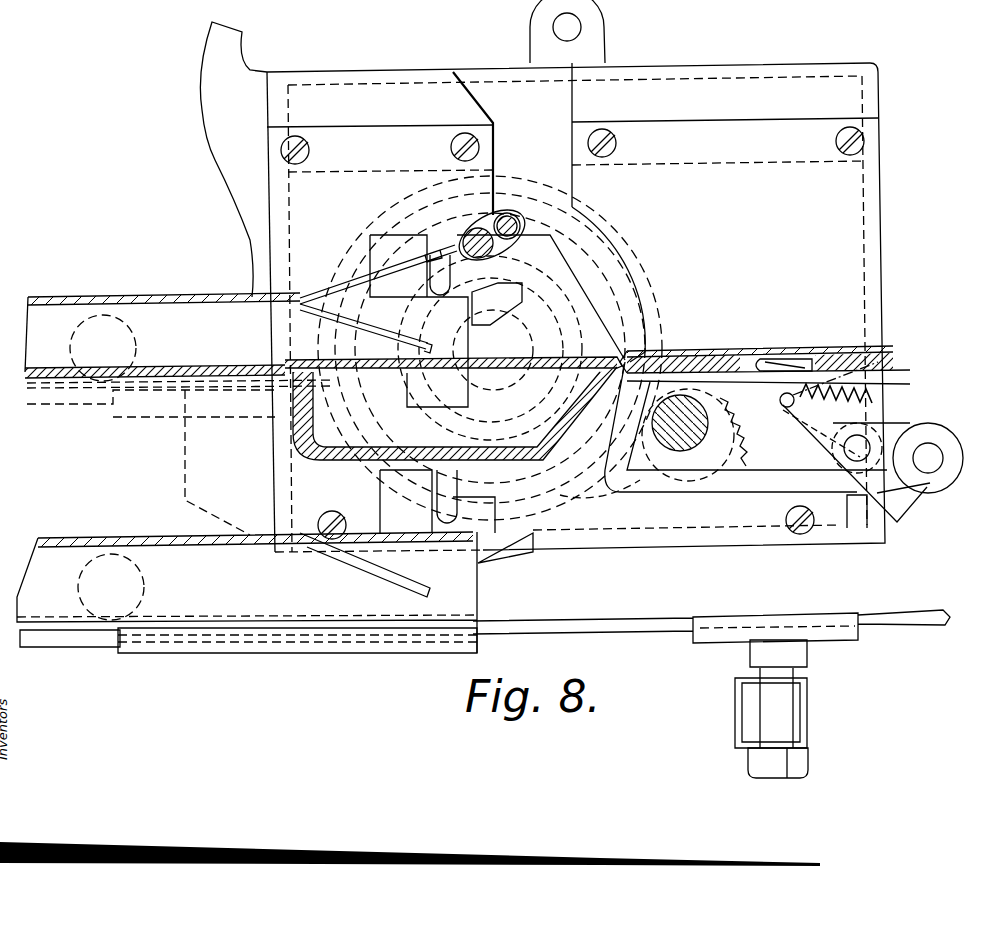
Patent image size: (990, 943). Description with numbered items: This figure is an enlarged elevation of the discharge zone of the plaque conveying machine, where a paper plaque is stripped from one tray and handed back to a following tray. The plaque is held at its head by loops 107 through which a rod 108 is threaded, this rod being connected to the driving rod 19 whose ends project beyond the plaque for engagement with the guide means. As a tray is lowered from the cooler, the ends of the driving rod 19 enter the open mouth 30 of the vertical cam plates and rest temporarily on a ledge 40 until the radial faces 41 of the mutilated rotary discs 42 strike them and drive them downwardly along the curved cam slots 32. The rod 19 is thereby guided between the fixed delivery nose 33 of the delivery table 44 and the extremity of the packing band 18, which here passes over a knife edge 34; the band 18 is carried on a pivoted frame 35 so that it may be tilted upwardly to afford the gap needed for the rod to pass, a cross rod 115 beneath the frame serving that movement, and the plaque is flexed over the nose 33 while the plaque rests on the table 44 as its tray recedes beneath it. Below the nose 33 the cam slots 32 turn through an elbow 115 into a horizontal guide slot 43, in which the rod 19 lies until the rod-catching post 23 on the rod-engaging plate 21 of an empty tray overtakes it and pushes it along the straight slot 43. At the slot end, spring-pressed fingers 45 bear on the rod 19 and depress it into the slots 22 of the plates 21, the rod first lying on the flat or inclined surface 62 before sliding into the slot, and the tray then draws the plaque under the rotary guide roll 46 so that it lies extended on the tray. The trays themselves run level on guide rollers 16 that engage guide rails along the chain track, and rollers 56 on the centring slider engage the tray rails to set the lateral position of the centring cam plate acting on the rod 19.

The guide rollers 16 is at (128, 345).
The packing band 18 is at (710, 357).
The driving rod 19 is at (515, 222).
The rod-engaging plates 21 is at (385, 491).
The slots 22 is at (443, 523).
The rod-catching post 23 is at (450, 485).
The open mouth 30 is at (517, 93).
The cam slots 32 is at (577, 215).
The delivery nose 33 is at (617, 360).
The knife edge 34 is at (645, 367).
The frame 35 is at (787, 359).
The ledge 40 is at (541, 297).
The radial faces 41 is at (493, 175).
The mutilated rotary discs 42 is at (373, 222).
The horizontal guide slot 43 is at (737, 482).
The delivery table 44 is at (510, 378).
The spring-pressed fingers 45 is at (900, 502).
The rotary guide roll 46 is at (690, 433).
The rollers 56 is at (823, 628).
The inclined surface 62 is at (508, 550).
The loops 107 is at (468, 240).
The rod 108 is at (497, 222).
The elbow 115 is at (623, 480).